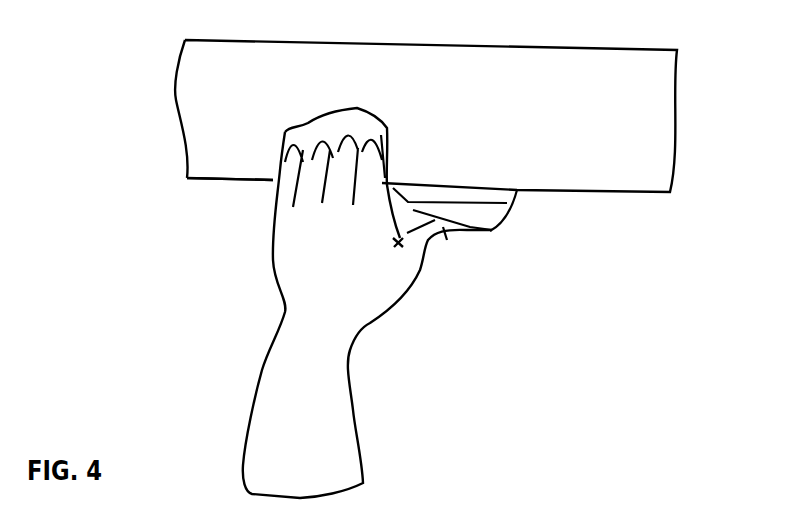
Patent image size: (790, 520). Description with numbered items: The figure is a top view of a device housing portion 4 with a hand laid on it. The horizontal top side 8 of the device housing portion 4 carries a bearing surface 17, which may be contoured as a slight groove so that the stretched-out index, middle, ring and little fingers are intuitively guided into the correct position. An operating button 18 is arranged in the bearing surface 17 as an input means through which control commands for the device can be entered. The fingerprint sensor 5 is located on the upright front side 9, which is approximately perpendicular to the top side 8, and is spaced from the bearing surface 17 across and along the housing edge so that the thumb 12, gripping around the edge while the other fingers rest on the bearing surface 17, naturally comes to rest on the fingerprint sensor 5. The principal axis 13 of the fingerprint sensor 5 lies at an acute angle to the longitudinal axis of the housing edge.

The device housing portion 4 is at (648, 100).
The fingerprint sensor 5 is at (493, 235).
The horizontal top side 8 is at (322, 53).
The upright front side 9 is at (207, 180).
The thumb 12 is at (447, 232).
The principal axis 13 is at (510, 220).
The bearing surface 17 is at (297, 127).
The operating button 18 is at (388, 127).